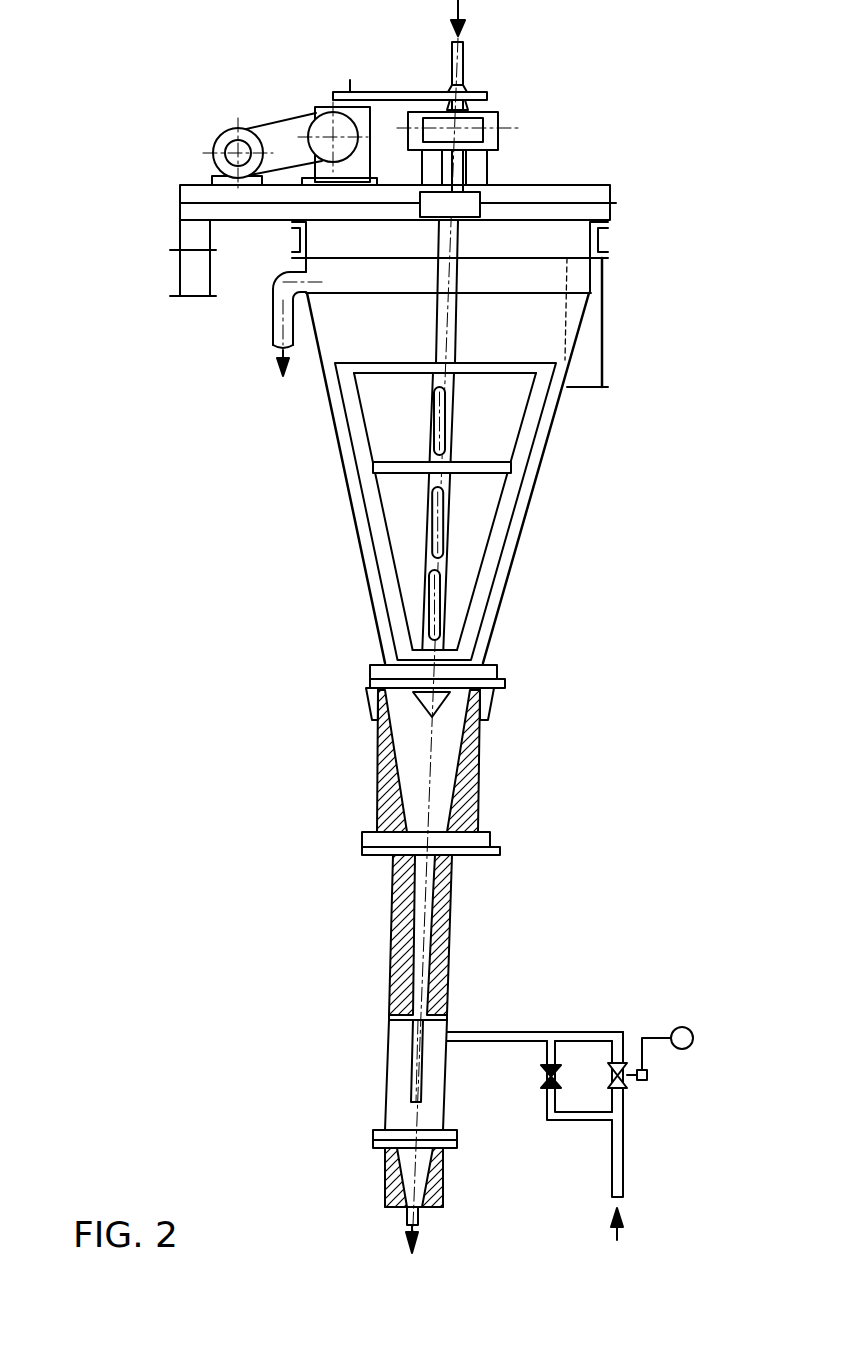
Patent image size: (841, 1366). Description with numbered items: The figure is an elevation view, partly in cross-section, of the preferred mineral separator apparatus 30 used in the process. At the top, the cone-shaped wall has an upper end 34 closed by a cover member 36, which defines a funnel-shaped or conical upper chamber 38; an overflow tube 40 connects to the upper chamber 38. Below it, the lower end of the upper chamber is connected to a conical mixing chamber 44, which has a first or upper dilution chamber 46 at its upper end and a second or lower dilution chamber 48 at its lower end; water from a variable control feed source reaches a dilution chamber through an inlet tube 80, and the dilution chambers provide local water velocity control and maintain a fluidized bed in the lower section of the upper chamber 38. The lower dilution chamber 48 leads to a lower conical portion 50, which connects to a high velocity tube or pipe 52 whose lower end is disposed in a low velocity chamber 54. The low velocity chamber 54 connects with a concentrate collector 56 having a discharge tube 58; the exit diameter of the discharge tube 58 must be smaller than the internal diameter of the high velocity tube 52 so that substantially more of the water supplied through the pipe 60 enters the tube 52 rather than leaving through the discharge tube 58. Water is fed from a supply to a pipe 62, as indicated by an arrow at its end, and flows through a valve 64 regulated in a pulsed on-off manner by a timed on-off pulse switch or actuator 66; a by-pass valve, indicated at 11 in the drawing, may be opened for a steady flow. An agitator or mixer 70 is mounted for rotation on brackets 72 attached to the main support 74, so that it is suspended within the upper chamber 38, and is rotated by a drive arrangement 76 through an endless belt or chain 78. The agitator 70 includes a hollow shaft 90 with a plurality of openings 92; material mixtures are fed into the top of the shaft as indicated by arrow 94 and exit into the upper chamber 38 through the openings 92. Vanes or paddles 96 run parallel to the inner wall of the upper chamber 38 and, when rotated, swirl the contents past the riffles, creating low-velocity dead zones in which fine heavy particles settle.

The separator apparatus 30 is at (616, 708).
The upper end 34 is at (478, 296).
The cover member 36 is at (560, 258).
The upper chamber 38 is at (342, 340).
The overflow tube 40 is at (271, 323).
The conical mixing chamber 44 is at (378, 762).
The first or upper dilution chamber 46 is at (373, 679).
The second or lower dilution chamber 48 is at (372, 848).
The lower conical portion 50 is at (393, 935).
The high velocity tube or pipe 52 is at (413, 1077).
The low velocity chamber 54 is at (385, 1112).
The concentrate collector 56 is at (385, 1178).
The discharge tube 58 is at (420, 1215).
The pipe 60 is at (498, 1032).
The pipe 62 is at (623, 1182).
The valve 64 is at (622, 1088).
The timed on-off pulse switch or actuator 66 is at (648, 1076).
The bypass valve 11 is at (543, 1083).
The agitator or mixer 70 is at (370, 540).
The brackets 72 is at (482, 200).
The main support 74 is at (178, 268).
The drive arrangement 76 is at (286, 106).
The endless belt or chain 78 is at (400, 92).
The inlet tube 80 is at (503, 690).
The hollow shaft 90 is at (437, 330).
The openings 92 is at (452, 410).
The arrow 94 is at (462, 6).
The vanes or paddles 96 is at (397, 595).